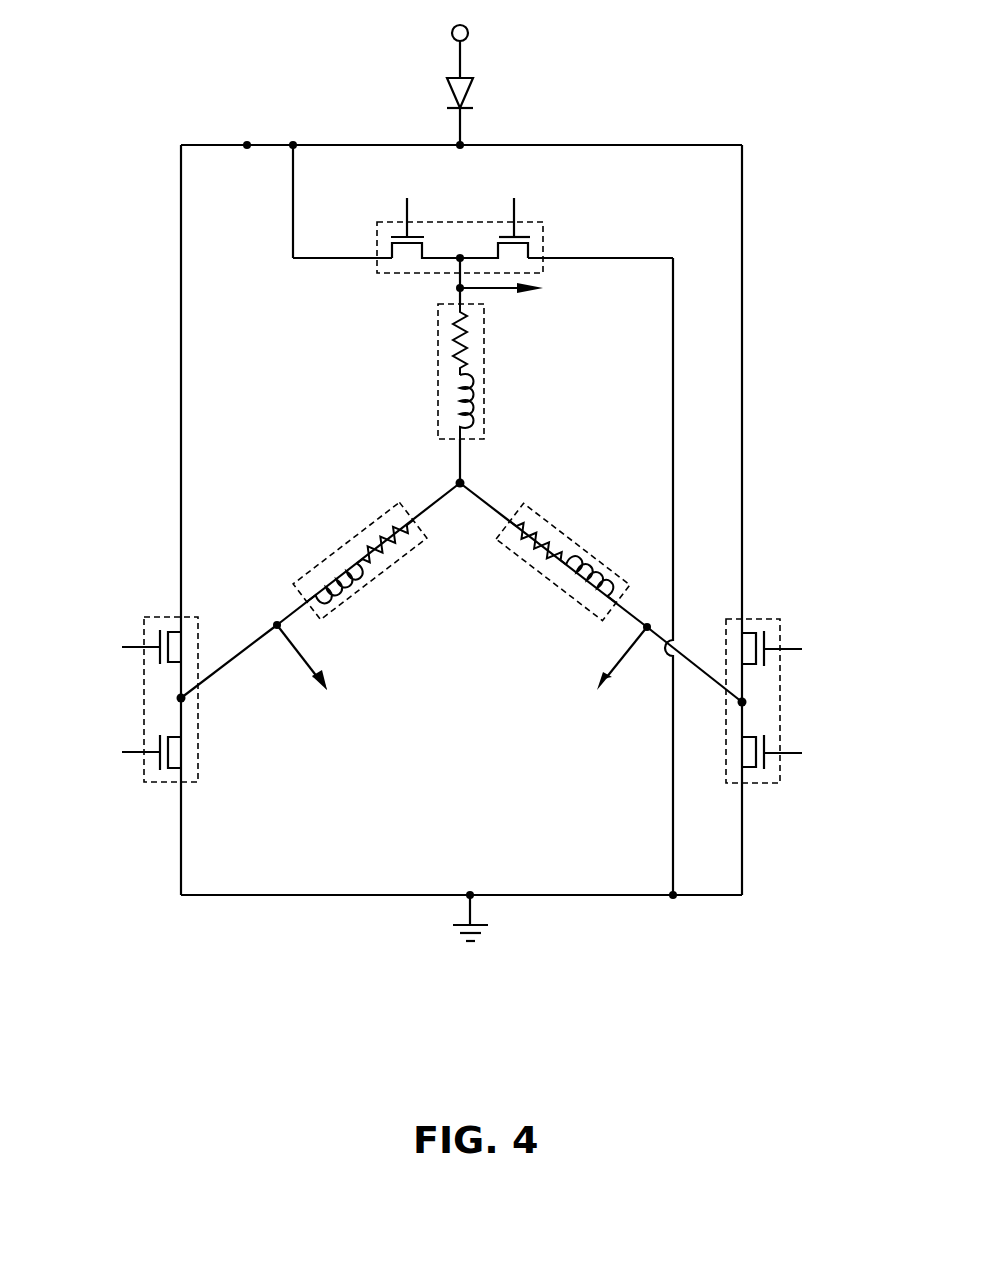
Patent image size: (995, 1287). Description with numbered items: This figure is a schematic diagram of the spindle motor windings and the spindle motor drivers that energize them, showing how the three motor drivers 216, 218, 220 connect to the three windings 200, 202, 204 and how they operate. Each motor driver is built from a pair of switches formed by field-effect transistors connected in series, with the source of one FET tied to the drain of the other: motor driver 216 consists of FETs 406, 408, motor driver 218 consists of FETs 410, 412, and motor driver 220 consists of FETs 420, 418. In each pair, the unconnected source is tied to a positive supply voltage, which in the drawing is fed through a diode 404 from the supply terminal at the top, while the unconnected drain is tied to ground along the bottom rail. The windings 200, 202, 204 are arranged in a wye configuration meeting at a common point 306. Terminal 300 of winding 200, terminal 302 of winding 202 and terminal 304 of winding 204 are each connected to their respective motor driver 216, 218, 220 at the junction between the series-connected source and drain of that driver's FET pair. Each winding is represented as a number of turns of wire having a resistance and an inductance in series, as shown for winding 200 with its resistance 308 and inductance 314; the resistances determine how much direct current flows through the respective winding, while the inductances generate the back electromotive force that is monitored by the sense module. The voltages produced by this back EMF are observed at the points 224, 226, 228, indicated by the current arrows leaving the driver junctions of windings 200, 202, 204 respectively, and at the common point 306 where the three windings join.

The diode 404 is at (472, 90).
The motor driver 216 is at (463, 224).
The field-effect transistor 406 is at (392, 250).
The field-effect transistor 408 is at (530, 250).
The terminal 300 is at (458, 260).
The point 224 is at (497, 291).
The winding 200 is at (460, 371).
The resistance 308 is at (454, 333).
The inductance 314 is at (454, 408).
The point 306 is at (460, 483).
The winding 204 is at (367, 573).
The winding 202 is at (557, 577).
The point 228 is at (292, 653).
The point 226 is at (630, 657).
The motor driver 220 is at (136, 699).
The field-effect transistor 420 is at (170, 630).
The field-effect transistor 418 is at (170, 770).
The terminal 304 is at (180, 698).
The motor driver 218 is at (788, 704).
The field-effect transistor 410 is at (753, 630).
The field-effect transistor 412 is at (755, 774).
The terminal 302 is at (744, 702).